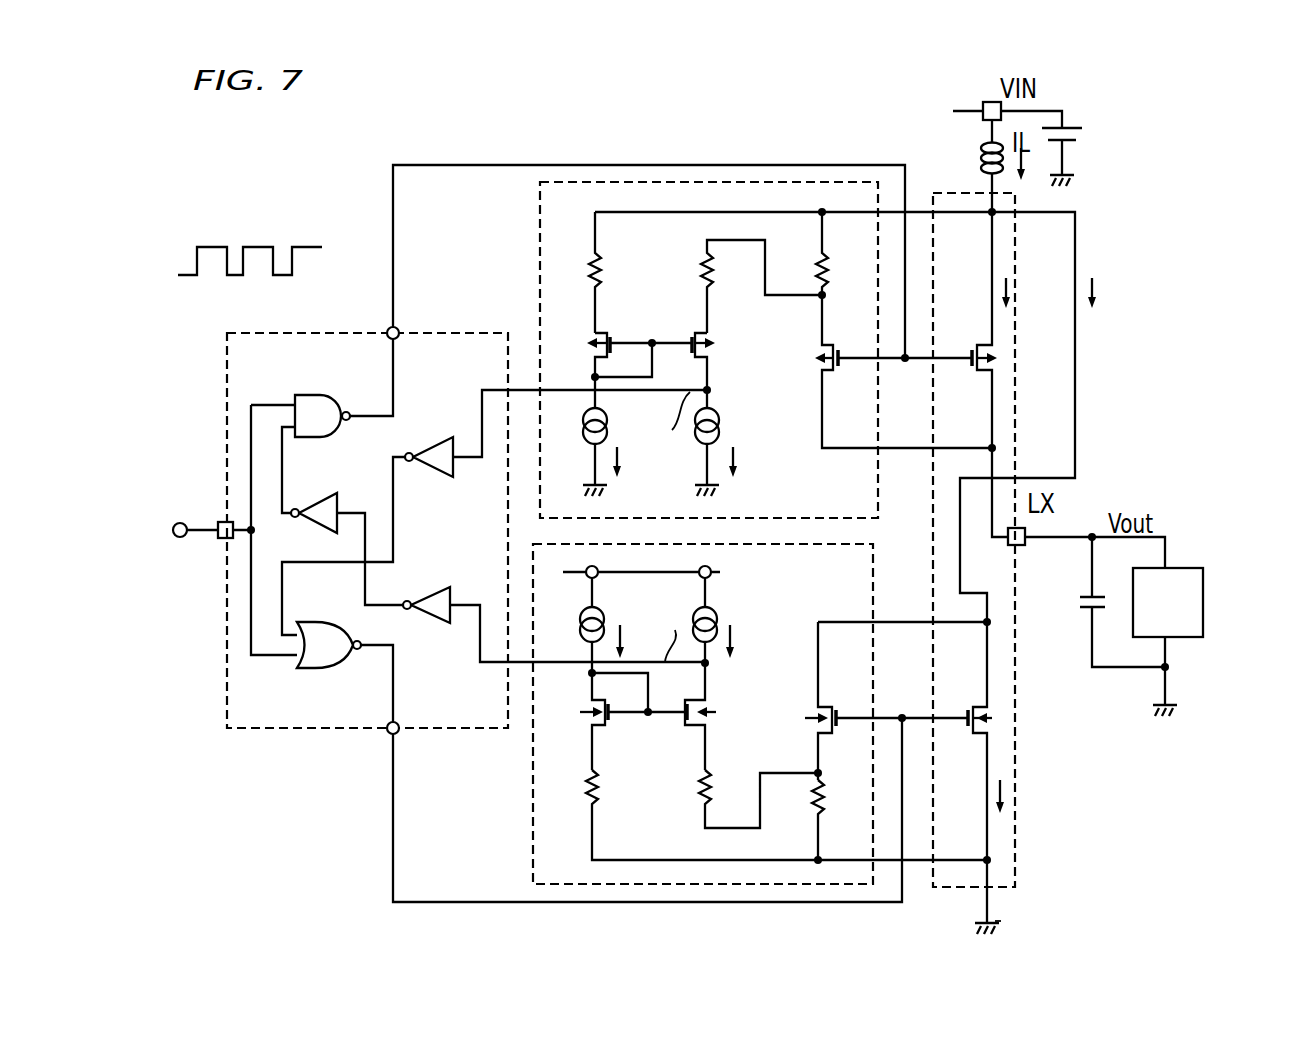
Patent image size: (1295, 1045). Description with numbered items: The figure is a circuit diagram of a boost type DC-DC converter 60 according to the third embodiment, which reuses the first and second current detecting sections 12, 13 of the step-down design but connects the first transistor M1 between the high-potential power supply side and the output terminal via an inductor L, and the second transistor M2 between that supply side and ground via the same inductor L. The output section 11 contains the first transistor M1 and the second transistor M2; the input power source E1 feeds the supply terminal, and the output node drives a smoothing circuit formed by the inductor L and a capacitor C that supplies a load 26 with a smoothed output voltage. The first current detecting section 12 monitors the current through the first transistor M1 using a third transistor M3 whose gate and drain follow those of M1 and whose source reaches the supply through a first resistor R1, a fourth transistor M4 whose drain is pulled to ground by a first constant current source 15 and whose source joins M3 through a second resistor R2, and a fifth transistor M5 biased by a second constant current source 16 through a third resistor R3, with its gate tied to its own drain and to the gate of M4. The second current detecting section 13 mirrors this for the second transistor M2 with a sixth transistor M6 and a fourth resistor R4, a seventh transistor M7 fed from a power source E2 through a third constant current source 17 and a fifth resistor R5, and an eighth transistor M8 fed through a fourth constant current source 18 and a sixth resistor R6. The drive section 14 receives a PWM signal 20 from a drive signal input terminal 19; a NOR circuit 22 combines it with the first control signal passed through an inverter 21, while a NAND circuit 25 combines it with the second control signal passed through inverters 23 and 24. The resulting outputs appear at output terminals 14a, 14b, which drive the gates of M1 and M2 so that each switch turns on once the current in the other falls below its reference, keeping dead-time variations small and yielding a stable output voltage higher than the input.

The output section 11 is at (1018, 345).
The first current detecting section 12 is at (540, 235).
The second current detecting section 13 is at (533, 810).
The drive section 14 is at (437, 333).
The output terminal of the drive section 14a is at (387, 330).
The output terminal of the drive section 14b is at (388, 734).
The first constant current source 15 is at (719, 431).
The second constant current source 16 is at (607, 431).
The third constant current source 17 is at (717, 612).
The fourth constant current source 18 is at (604, 612).
The drive signal input terminal 19 is at (218, 522).
The PWM signal 20 is at (267, 247).
The inverter 21 is at (426, 447).
The NOR circuit 22 is at (305, 668).
The inverter 23 is at (430, 623).
The inverter 24 is at (310, 505).
The NAND circuit 25 is at (310, 395).
The load 26 is at (1203, 602).
The DC-DC converter 60 is at (810, 131).
The inductor L is at (982, 152).
The capacitor C is at (1082, 597).
The input power source E1 is at (1068, 124).
The power source E2 is at (641, 562).
The first resistor R1 is at (827, 263).
The second resistor R2 is at (714, 272).
The third resistor R3 is at (600, 264).
The fourth resistor R4 is at (823, 820).
The fifth resistor R5 is at (710, 791).
The sixth resistor R6 is at (604, 792).
The first transistor M1 is at (965, 345).
The second transistor M2 is at (963, 706).
The third transistor M3 is at (830, 343).
The fourth transistor M4 is at (691, 322).
The fifth transistor M5 is at (603, 322).
The sixth transistor M6 is at (828, 706).
The seventh transistor M7 is at (710, 708).
The eighth transistor M8 is at (588, 708).